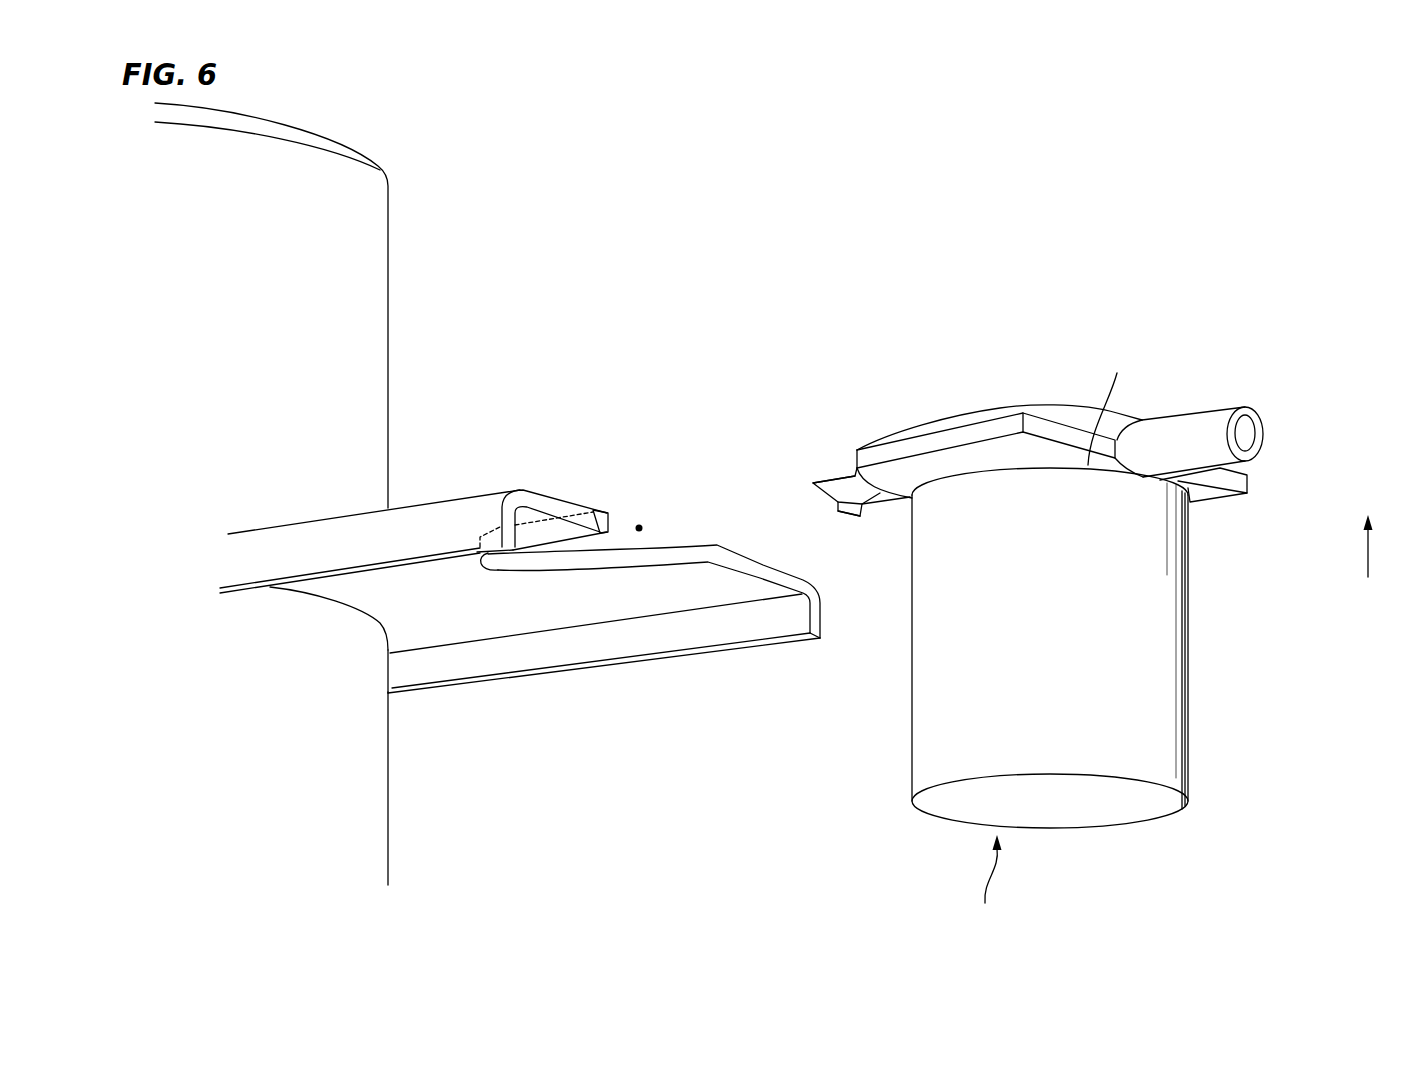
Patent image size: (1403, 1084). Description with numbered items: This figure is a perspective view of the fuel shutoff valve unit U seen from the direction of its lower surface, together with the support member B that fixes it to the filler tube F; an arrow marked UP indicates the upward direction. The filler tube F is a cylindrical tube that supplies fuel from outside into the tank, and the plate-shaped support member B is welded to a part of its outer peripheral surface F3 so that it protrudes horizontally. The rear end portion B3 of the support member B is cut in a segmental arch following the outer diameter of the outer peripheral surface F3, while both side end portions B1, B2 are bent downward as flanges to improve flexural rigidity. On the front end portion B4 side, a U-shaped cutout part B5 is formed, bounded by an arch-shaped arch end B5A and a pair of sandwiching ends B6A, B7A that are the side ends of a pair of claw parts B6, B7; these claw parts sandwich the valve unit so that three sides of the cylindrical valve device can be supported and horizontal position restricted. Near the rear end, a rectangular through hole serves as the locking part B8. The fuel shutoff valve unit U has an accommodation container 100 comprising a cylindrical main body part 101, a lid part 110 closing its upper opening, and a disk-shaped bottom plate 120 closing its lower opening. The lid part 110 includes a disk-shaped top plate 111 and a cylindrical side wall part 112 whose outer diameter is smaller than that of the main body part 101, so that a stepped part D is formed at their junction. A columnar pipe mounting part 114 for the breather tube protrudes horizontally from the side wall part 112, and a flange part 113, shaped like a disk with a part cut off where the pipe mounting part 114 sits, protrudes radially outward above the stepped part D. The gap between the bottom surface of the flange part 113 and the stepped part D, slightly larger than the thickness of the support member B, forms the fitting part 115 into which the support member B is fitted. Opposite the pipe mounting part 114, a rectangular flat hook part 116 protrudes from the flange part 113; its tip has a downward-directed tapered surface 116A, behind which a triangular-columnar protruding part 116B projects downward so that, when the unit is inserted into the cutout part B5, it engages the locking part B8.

The filler tube F is at (414, 240).
The outer peripheral surface F3 is at (352, 335).
The support member B is at (520, 573).
The side end portion B1 is at (448, 527).
The side end portion B2 is at (742, 627).
The rear end portion B3 is at (368, 617).
The front end portion B4 is at (760, 557).
The cutout part B5 is at (640, 522).
The arch end B5A is at (500, 560).
The claw part B6 is at (543, 490).
The sandwiching end B6A is at (600, 510).
The claw part B7 is at (633, 602).
The sandwiching end B7A is at (673, 555).
The locking part B8 is at (375, 589).
The accommodation container 100 is at (1023, 588).
The main body part 101 is at (1165, 674).
The lid part 110 is at (993, 428).
The top plate 111 is at (1000, 407).
The side wall part 112 is at (1063, 413).
The flange part 113 is at (910, 430).
The pipe mounting part 114 is at (1208, 412).
The fitting part 115 is at (1030, 476).
The hook part 116 is at (838, 480).
The tapered surface 116A is at (823, 500).
The protruding part 116B is at (865, 513).
The bottom plate 120 is at (1085, 810).
The stepped part D is at (1105, 404).
The fuel shutoff valve unit U is at (997, 938).
The upward direction UP is at (1368, 528).